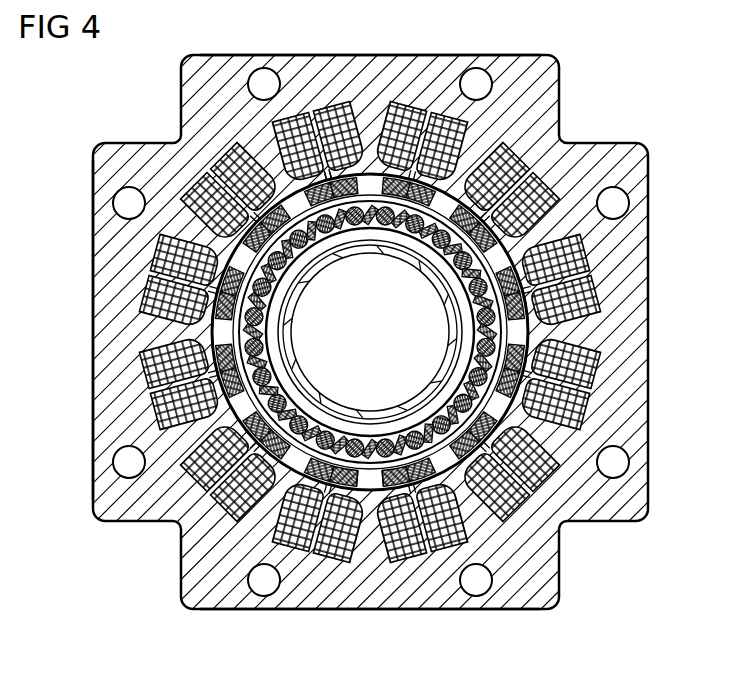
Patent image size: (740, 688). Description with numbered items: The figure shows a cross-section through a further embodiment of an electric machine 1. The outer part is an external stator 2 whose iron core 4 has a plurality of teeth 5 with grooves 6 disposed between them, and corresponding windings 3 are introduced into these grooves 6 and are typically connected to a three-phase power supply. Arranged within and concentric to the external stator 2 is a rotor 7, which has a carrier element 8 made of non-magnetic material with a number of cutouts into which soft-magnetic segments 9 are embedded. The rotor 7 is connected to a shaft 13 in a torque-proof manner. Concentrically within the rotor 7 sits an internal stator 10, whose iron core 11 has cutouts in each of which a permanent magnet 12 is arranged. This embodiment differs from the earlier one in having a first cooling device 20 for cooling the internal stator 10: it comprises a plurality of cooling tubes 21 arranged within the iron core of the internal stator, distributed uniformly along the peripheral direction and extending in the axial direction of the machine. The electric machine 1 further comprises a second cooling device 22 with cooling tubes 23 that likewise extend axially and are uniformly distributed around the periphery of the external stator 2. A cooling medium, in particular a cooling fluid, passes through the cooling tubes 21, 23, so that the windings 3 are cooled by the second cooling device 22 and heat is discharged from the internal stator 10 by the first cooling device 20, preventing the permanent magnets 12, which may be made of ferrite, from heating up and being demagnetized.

The electric machine 1 is at (168, 116).
The external stator 2 is at (368, 82).
The windings 3 is at (397, 354).
The iron core 4 is at (393, 76).
The teeth 5 is at (175, 216).
The grooves 6 is at (291, 93).
The rotor 7 is at (332, 370).
The carrier element 8 is at (320, 564).
The soft-magnetic segments 9 is at (361, 572).
The internal stator 10 is at (281, 425).
The iron core 11 is at (370, 332).
The permanent magnet 12 is at (370, 569).
The shaft 13 is at (370, 332).
The first cooling device 20 is at (370, 332).
The cooling tubes 21 is at (370, 332).
The second cooling device 22 is at (238, 592).
The cooling tubes 23 is at (264, 598).